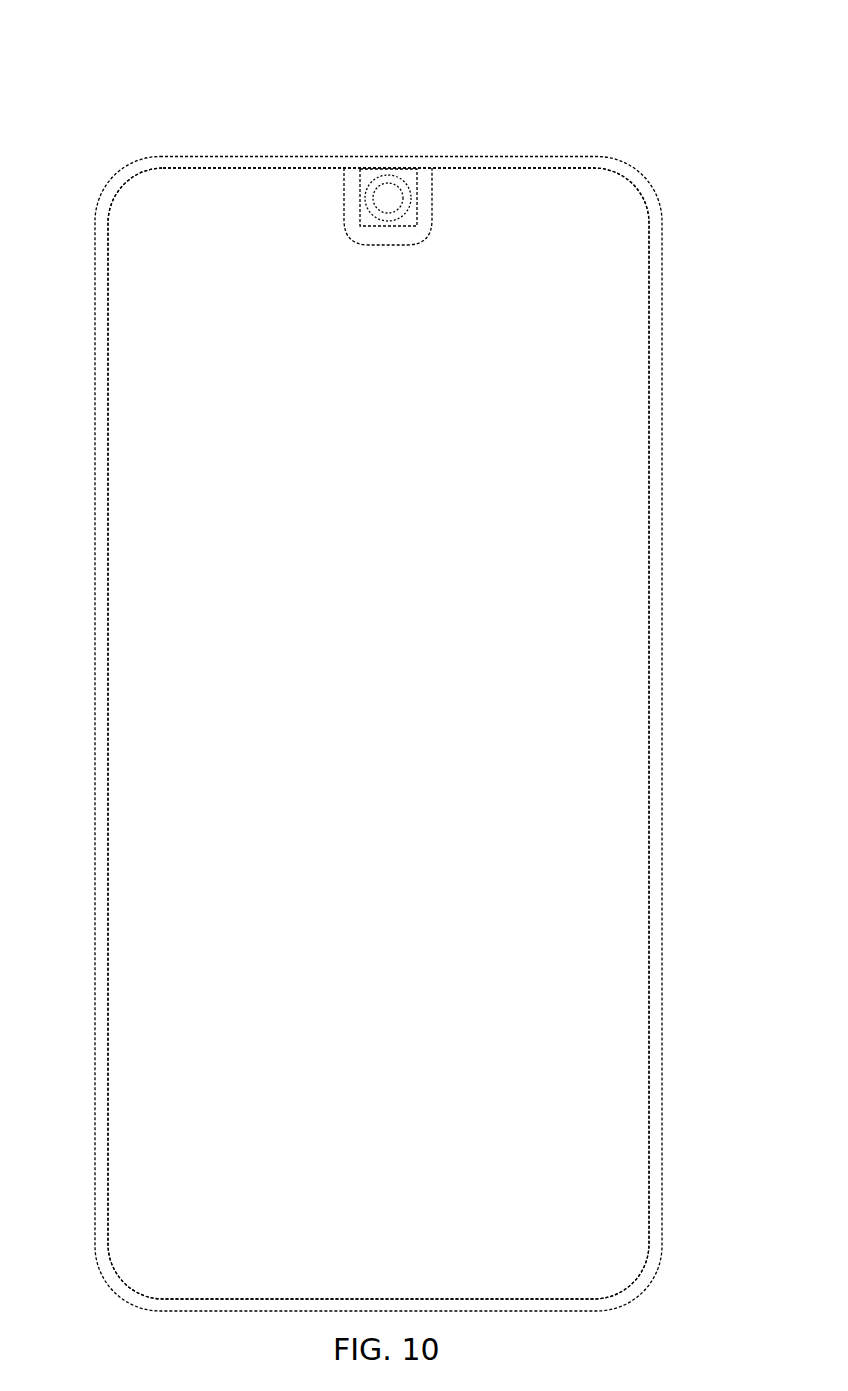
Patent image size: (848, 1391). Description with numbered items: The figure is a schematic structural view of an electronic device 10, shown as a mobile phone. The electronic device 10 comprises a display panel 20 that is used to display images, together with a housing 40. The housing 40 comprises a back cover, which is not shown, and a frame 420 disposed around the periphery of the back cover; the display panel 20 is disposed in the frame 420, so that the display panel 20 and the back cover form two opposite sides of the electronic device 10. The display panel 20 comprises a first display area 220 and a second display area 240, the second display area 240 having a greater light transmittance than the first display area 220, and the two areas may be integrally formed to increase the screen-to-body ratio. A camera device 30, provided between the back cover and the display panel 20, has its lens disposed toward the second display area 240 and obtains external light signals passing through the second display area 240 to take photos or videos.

The electronic device 10 is at (63, 26).
The display panel 20 is at (630, 473).
The camera device 30 is at (374, 181).
The housing 40 is at (617, 166).
The first display area 220 is at (428, 190).
The second display area 240 is at (411, 183).
The frame 420 is at (655, 345).